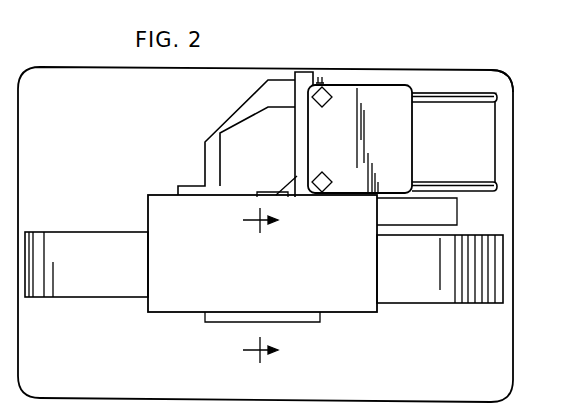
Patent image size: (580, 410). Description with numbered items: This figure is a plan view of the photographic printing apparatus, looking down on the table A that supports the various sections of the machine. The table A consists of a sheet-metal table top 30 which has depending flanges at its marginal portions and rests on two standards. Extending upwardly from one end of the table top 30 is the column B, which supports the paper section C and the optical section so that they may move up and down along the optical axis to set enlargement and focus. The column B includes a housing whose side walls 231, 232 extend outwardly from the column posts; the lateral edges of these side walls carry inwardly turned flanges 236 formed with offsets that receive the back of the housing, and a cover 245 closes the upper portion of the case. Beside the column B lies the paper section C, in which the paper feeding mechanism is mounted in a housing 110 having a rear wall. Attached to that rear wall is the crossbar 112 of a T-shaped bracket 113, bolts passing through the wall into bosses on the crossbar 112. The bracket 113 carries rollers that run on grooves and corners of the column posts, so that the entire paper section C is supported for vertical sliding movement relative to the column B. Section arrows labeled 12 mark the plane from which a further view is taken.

The table A is at (502, 380).
The column B is at (498, 98).
The paper section C is at (170, 303).
The section line 12 is at (276, 285).
The table top 30 is at (498, 85).
The housing 110 is at (368, 303).
The crossbar 112 is at (270, 192).
The T-shaped bracket 113 is at (298, 162).
The side wall 231 is at (482, 191).
The side wall 232 is at (450, 93).
The inwardly turned flanges 236 is at (475, 100).
The cover 245 is at (377, 107).